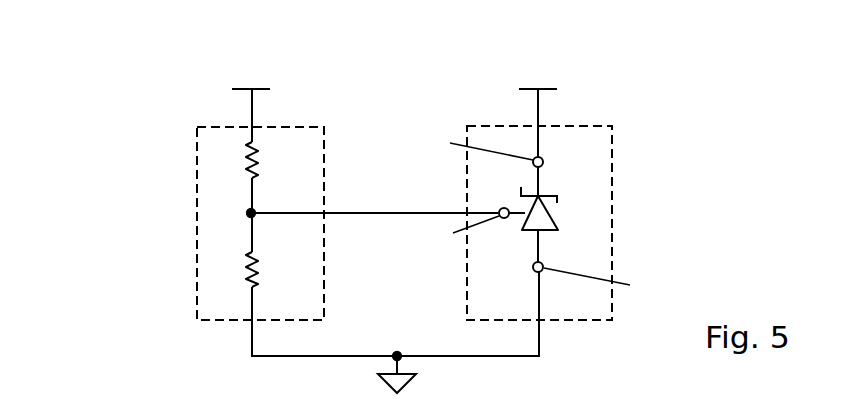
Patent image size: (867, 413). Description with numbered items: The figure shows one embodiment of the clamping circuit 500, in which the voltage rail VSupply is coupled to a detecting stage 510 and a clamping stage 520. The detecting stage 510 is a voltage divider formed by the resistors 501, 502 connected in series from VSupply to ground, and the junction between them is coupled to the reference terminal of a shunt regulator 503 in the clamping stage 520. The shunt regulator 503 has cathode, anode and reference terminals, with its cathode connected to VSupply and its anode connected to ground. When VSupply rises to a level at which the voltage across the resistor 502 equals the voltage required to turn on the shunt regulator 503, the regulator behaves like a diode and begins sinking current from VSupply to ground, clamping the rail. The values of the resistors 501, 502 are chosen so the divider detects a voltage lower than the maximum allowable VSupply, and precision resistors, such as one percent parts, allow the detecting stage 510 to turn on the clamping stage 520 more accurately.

The clamping circuit 500 is at (405, 199).
The resistor 501 is at (275, 160).
The resistor 502 is at (275, 269).
The shunt regulator 503 is at (562, 208).
The detecting stage 510 is at (197, 213).
The clamping stage 520 is at (612, 177).